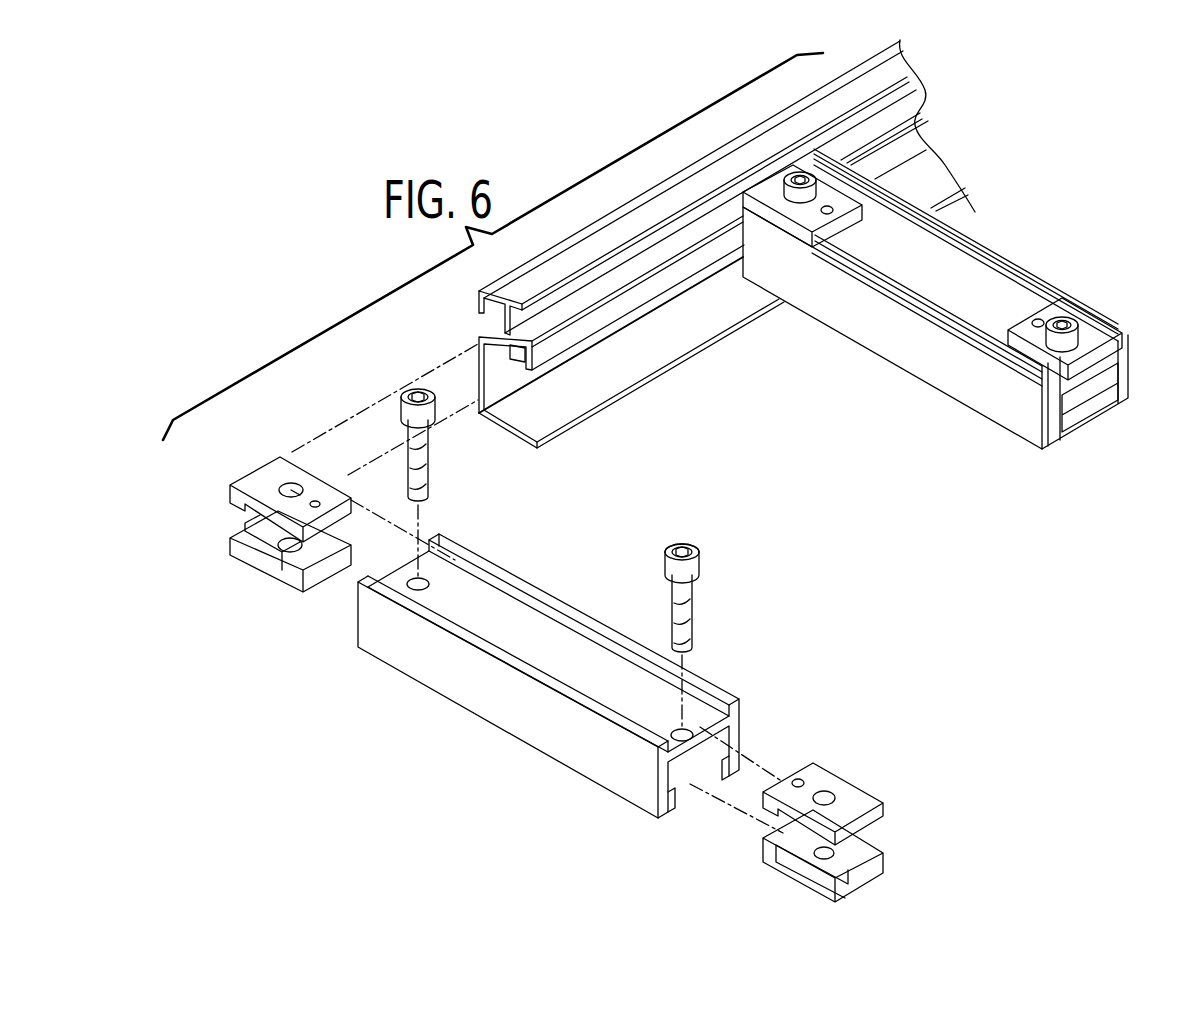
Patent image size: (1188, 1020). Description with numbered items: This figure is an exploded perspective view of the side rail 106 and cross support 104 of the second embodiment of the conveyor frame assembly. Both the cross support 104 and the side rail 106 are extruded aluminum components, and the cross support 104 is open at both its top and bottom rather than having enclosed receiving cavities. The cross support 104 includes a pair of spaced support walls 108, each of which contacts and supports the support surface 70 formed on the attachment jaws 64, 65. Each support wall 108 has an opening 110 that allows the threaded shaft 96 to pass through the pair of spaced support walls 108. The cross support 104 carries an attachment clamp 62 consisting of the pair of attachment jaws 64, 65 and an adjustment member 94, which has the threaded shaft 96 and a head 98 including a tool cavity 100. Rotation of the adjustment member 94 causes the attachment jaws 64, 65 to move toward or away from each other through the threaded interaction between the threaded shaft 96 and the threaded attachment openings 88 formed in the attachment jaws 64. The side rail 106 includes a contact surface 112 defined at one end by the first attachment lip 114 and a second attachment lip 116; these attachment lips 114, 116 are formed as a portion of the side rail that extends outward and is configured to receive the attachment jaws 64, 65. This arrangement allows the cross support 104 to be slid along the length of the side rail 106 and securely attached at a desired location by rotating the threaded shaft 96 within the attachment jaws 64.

The attachment clamp 62 is at (787, 745).
The attachment jaw 64 is at (768, 183).
The attachment jaw 65 is at (1067, 447).
The support surface 70 is at (785, 845).
The threaded attachment opening 88 is at (827, 797).
The adjustment member 94 is at (705, 615).
The threaded shaft 96 is at (667, 607).
The head 98 is at (795, 197).
The tool cavity 100 is at (672, 545).
The cross support 104 is at (960, 380).
The side rail 106 is at (682, 170).
The support wall 108 is at (540, 640).
The opening 110 is at (690, 733).
The contact surface 112 is at (924, 134).
The first attachment lip 114 is at (916, 99).
The second attachment lip 116 is at (925, 168).